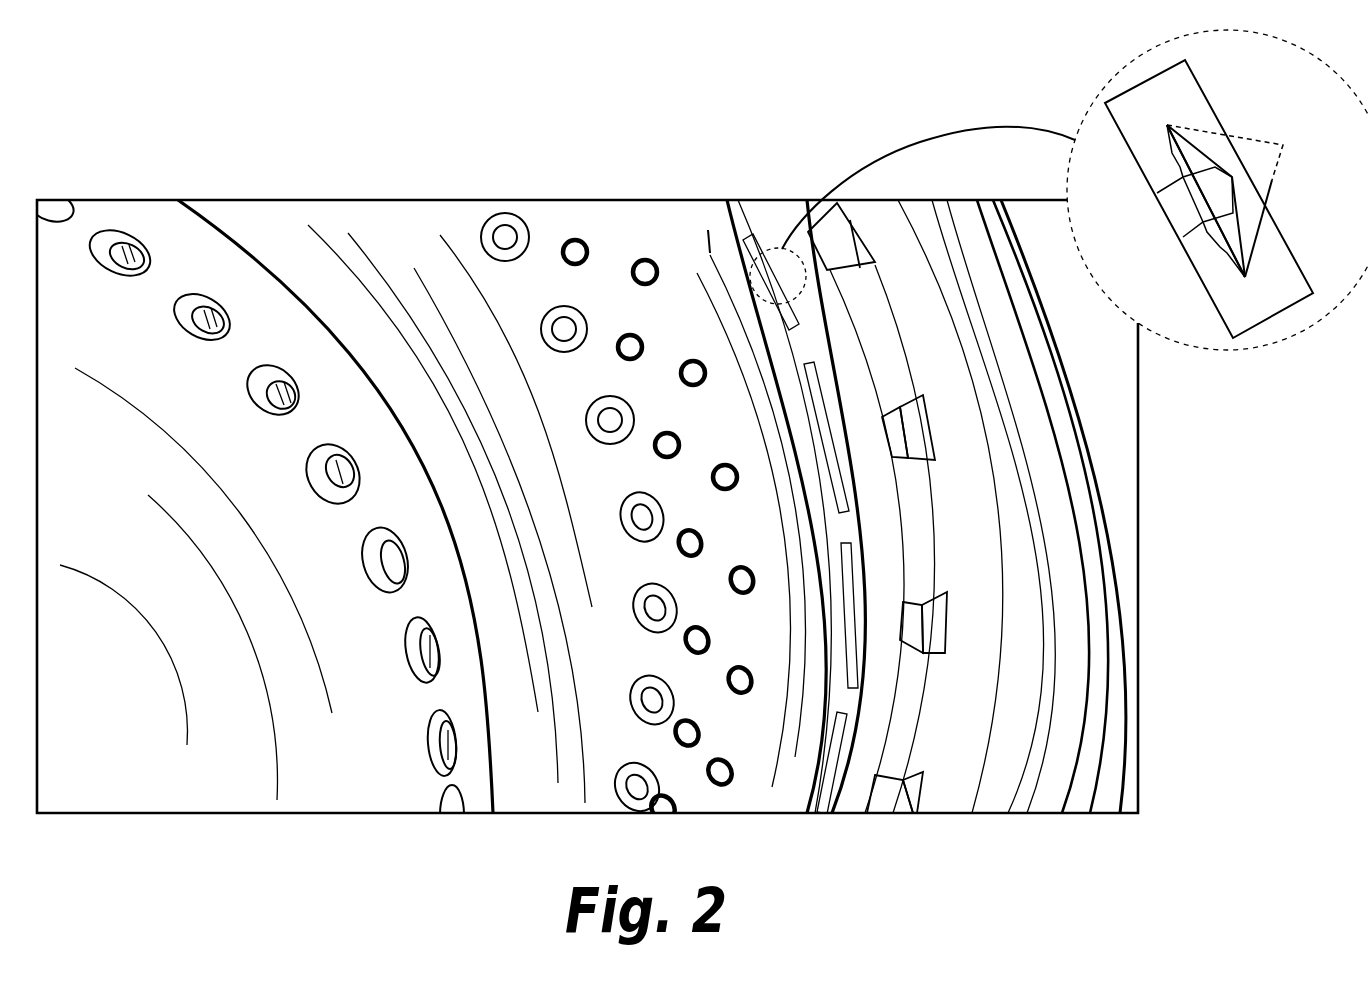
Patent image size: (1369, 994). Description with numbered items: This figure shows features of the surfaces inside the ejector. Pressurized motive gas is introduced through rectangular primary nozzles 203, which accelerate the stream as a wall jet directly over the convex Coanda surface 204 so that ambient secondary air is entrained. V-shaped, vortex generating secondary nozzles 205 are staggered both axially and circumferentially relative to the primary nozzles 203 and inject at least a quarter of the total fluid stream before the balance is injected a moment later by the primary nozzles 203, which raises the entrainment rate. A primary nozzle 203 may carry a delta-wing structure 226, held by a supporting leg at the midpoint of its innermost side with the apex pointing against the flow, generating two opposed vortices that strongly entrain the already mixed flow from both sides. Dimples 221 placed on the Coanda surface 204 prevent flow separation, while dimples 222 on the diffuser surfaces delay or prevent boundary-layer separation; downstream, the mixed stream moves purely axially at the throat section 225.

The primary nozzles 203 is at (768, 248).
The convex Coanda surface 204 is at (702, 253).
The V-shaped vortex generating secondary nozzles 205 is at (907, 447).
The dimples 221 is at (632, 262).
The dimples 222 is at (270, 367).
The throat section 225 is at (282, 282).
The delta-wing structure 226 is at (1242, 193).